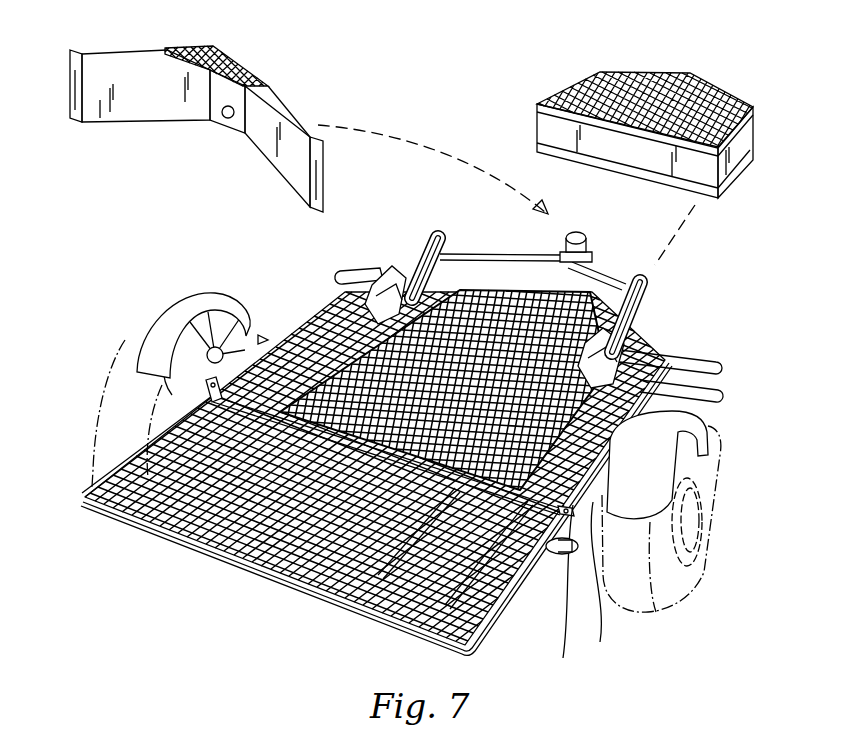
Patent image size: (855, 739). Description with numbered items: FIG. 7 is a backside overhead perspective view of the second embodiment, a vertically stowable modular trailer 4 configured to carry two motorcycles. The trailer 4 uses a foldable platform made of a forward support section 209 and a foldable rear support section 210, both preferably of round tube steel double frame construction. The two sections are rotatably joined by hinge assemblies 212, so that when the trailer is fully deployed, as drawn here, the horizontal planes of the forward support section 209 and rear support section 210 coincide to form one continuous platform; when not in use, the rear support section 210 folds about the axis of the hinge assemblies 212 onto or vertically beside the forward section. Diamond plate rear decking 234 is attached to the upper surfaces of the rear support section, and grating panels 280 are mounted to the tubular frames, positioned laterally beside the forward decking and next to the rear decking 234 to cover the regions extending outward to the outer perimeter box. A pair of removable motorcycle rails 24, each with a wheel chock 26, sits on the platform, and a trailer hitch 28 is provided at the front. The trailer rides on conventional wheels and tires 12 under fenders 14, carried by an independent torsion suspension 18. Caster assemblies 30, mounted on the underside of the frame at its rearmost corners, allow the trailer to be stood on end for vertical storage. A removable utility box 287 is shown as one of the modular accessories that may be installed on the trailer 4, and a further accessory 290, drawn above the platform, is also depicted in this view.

The modular trailer 4 is at (58, 313).
The wheels and tires 12 is at (135, 378).
The fenders 14 is at (172, 307).
The independent torsion suspension 18 is at (600, 620).
The removable motorcycle rail 24 is at (420, 256).
The wheel chock 26 is at (380, 274).
The trailer hitch 28 is at (586, 248).
The caster assembly 30 is at (553, 557).
The forward support section 209 is at (507, 297).
The foldable rear support section 210 is at (250, 556).
The hinge assembly 212 is at (258, 352).
The rear decking 234 is at (444, 336).
The grating panel 280 is at (95, 512).
The removable utility box 287 is at (567, 92).
The ramp 290 is at (132, 50).